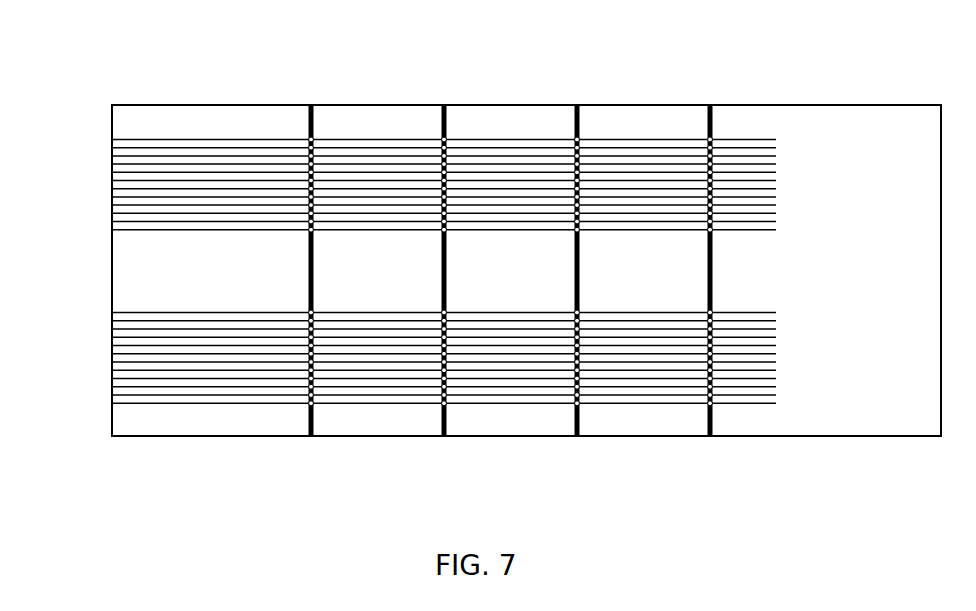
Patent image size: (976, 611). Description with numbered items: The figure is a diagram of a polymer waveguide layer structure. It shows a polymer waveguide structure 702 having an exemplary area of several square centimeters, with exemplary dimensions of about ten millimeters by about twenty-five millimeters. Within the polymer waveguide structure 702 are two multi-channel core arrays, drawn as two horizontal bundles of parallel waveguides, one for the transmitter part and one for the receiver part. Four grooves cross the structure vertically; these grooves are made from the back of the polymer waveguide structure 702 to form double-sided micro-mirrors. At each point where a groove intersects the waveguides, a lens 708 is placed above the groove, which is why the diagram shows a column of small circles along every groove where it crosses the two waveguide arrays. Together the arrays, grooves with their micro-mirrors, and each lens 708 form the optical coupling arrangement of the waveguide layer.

The polymer waveguide structure 702 is at (343, 105).
The lens 708 is at (575, 139).